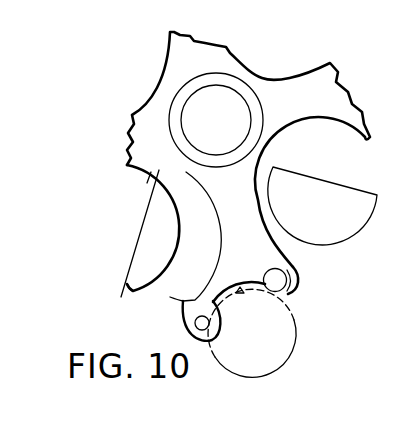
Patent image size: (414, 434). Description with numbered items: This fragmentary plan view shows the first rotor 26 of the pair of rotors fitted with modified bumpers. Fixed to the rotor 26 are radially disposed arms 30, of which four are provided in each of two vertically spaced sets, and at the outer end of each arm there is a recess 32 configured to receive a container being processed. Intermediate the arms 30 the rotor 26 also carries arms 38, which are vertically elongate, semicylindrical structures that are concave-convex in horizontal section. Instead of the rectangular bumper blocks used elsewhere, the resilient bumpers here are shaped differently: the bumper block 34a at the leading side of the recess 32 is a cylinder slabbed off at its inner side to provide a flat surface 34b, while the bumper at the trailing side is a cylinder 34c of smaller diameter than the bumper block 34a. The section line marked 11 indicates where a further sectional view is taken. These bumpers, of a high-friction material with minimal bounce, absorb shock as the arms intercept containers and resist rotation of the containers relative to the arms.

The section line 11- 11 is at (167, 175).
The rotor 26 is at (242, 87).
The radially disposed arms 30 is at (252, 258).
The recess 32 is at (200, 341).
The bumper block 34a is at (278, 282).
The flat surface 34b is at (283, 294).
The cylinder 34c is at (183, 301).
The arms 38 is at (139, 290).